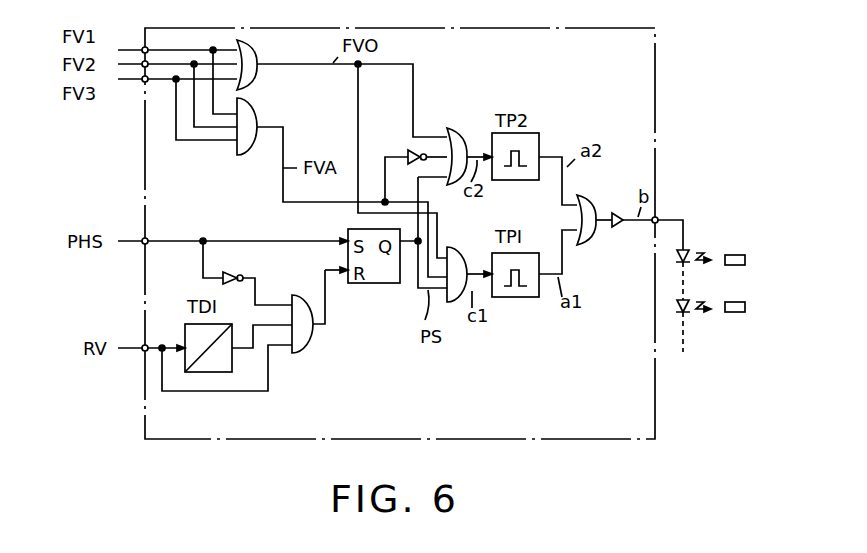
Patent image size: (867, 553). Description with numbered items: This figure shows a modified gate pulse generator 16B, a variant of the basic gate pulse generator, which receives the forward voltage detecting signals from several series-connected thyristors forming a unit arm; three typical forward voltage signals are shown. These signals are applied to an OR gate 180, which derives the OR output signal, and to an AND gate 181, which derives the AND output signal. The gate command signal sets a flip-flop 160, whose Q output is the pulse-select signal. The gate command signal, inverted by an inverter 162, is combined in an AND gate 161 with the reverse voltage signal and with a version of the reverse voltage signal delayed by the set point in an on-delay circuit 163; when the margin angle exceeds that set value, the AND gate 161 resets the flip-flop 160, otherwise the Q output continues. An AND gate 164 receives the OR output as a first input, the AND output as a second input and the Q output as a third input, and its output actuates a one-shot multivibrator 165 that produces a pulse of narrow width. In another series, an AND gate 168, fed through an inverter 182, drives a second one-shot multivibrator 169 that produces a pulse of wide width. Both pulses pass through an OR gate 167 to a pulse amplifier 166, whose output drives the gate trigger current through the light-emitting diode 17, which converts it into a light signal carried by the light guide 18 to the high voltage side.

The gate pulse generator 16B is at (657, 397).
The OR gate 180 is at (257, 58).
The AND gate 181 is at (257, 118).
The inverter 182 is at (410, 150).
The AND gate 168 is at (463, 130).
The one-shot multivibrator 169 is at (542, 141).
The AND gate 164 is at (457, 247).
The one-shot multivibrator 165 is at (517, 298).
The flip-flop 160 is at (378, 285).
The inverter 162 is at (230, 274).
The on-delay circuit 163 is at (213, 373).
The AND gate 161 is at (310, 348).
The OR gate 167 is at (590, 203).
The pulse amplifier 166 is at (618, 228).
The light-emitting diode 17 is at (697, 336).
The light guide 18 is at (734, 336).